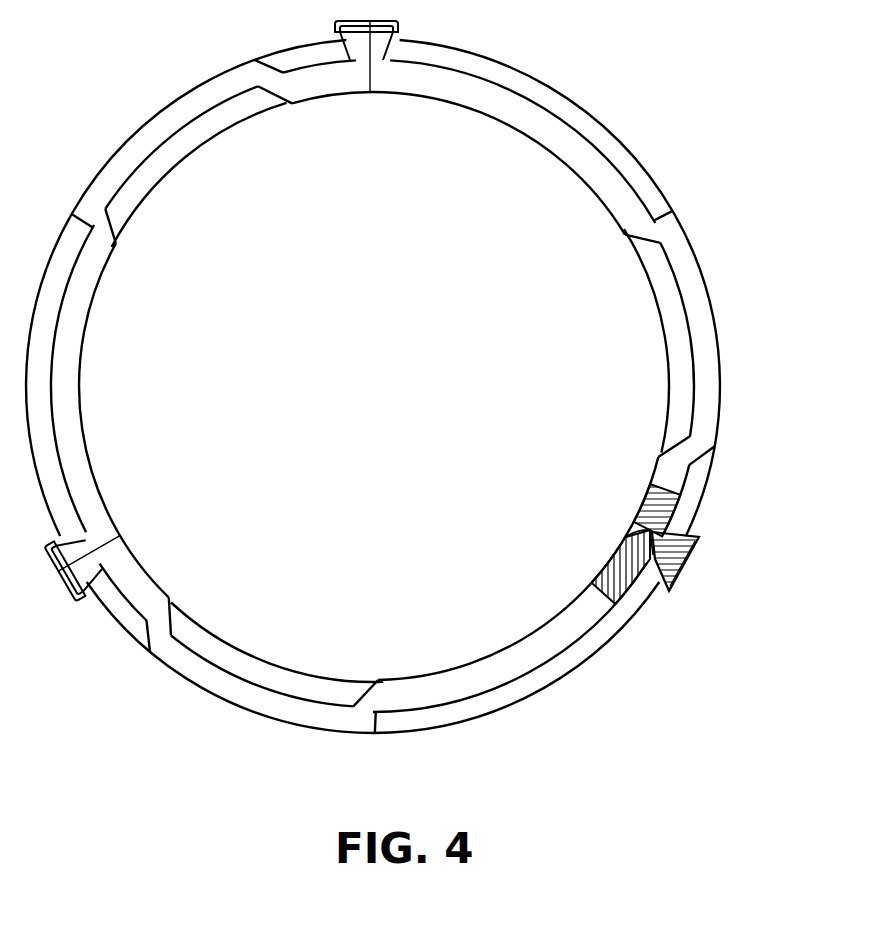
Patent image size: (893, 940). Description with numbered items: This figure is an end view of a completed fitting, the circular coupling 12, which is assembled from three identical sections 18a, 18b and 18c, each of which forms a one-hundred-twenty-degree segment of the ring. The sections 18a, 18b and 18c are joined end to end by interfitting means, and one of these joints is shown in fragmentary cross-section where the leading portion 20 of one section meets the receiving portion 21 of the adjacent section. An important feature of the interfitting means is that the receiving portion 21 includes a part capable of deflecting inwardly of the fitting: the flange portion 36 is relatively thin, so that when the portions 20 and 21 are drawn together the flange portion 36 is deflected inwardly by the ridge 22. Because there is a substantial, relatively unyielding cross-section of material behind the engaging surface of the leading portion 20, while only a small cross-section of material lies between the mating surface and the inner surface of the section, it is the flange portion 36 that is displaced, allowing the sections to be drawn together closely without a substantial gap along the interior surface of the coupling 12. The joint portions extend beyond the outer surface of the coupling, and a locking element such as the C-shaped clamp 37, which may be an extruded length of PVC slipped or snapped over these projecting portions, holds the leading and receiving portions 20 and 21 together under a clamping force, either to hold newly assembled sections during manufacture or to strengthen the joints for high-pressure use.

The circular coupling 12 is at (533, 71).
The section 18a is at (426, 707).
The section 18b is at (339, 90).
The section 18c is at (424, 90).
The leading portion 20 is at (606, 554).
The receiving portion 21 is at (628, 506).
The ridge 22 is at (626, 535).
The flange portion 36 is at (640, 528).
The C-shaped clamp 37 is at (698, 540).